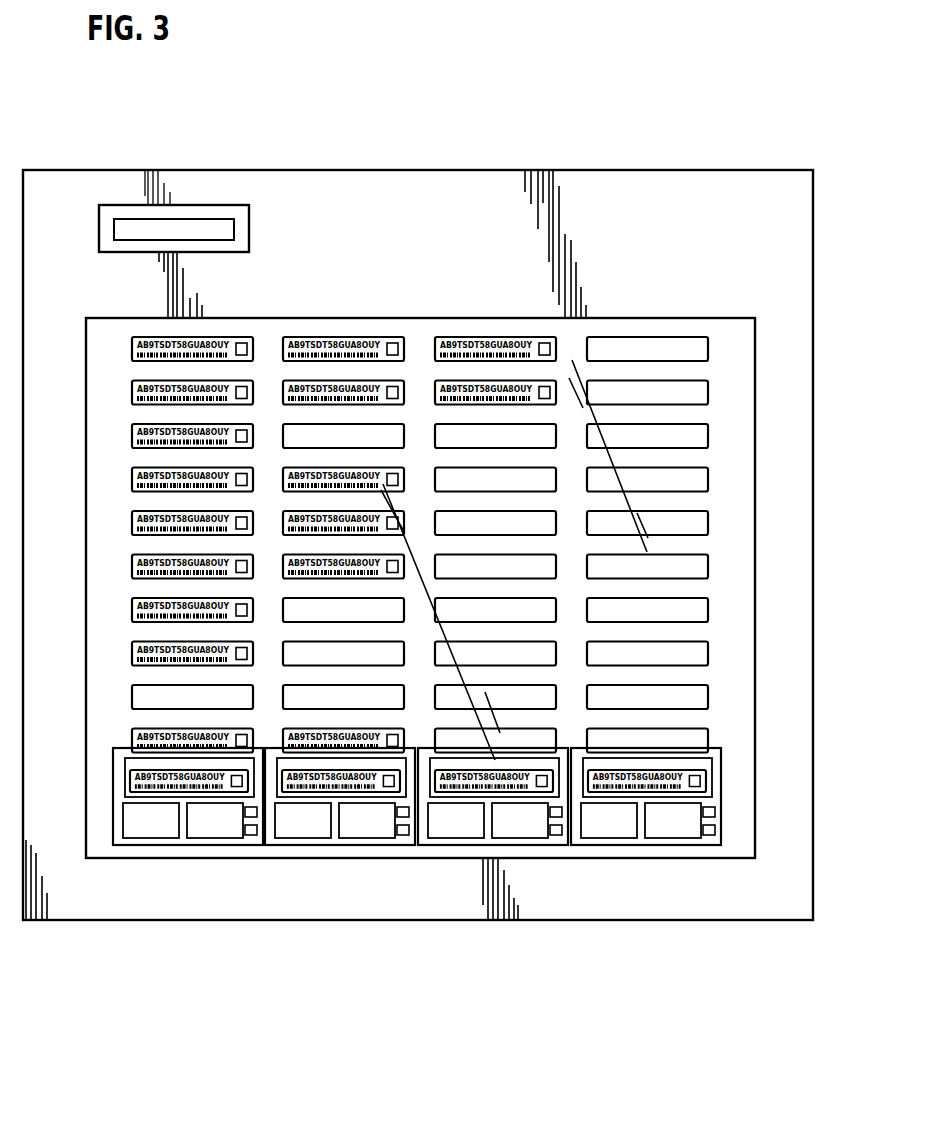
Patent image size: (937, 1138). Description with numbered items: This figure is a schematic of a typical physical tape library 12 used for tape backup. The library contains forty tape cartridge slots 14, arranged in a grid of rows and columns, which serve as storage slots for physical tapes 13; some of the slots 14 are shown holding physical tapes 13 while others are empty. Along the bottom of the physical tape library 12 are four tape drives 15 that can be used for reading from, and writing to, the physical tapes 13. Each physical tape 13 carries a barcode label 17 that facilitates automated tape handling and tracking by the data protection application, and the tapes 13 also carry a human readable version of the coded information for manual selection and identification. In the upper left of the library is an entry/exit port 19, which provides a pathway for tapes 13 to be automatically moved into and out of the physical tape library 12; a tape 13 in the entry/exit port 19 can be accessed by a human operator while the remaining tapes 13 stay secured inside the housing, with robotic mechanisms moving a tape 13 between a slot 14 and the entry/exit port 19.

The physical tape library 12 is at (298, 942).
The physical tape 13 is at (132, 388).
The tape cartridge slot 14 is at (132, 707).
The tape drive 15 is at (250, 845).
The barcode label 17 is at (132, 517).
The entry/exit port 19 is at (199, 224).